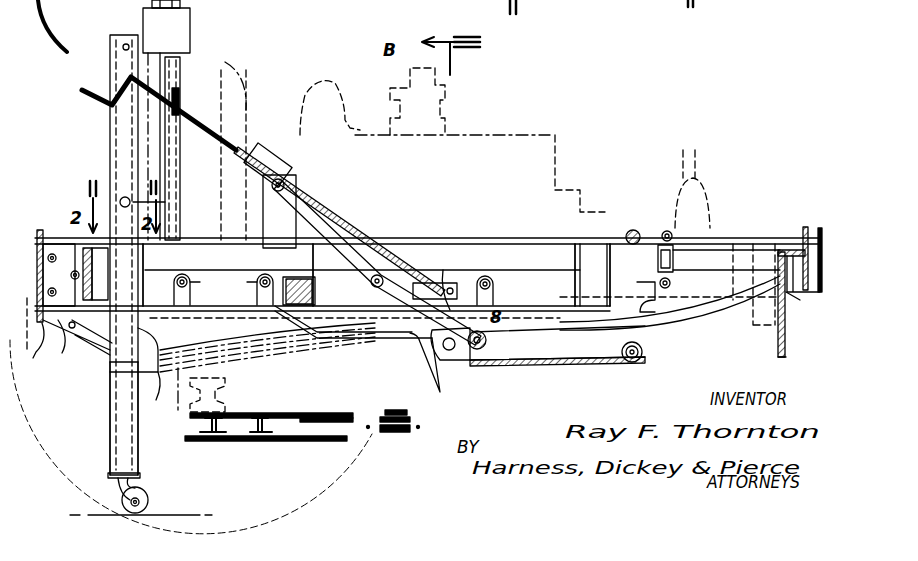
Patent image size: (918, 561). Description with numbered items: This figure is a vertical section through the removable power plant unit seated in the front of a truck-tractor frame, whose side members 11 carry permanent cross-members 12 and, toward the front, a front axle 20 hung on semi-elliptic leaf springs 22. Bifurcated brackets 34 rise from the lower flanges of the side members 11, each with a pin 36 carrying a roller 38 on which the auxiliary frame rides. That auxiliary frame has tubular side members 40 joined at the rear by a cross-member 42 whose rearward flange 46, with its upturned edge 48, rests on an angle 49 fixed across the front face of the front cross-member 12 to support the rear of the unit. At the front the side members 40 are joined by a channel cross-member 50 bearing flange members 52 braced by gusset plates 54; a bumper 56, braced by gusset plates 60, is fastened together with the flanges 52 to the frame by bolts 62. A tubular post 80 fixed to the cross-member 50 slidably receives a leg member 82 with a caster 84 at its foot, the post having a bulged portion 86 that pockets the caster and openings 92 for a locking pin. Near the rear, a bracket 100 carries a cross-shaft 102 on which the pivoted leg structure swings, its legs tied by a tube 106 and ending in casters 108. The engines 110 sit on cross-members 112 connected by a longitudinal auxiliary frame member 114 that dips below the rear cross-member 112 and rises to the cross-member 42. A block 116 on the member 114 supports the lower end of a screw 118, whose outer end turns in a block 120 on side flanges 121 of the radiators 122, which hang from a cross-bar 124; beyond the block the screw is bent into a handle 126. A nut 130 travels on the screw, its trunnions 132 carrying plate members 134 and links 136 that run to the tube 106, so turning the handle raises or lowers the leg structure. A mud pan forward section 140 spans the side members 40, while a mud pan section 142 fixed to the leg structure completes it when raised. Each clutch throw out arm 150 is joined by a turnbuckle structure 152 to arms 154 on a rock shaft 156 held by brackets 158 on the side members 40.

The frame side members 11 is at (737, 227).
The cross-members 12 is at (793, 227).
The front axle 20 is at (225, 394).
The semi-elliptic leaf springs 22 is at (284, 425).
The bifurcated brackets 34 is at (180, 297).
The pin 36 is at (268, 300).
The roller 38 is at (498, 265).
The side members 40 is at (497, 246).
The cross-member 42 is at (785, 332).
The rearwardly directed flange 46 is at (790, 230).
The upwardly curved edge 48 is at (799, 226).
The angle 49 is at (790, 294).
The channel sectioned cross-member 50 is at (120, 355).
The flange member 52 is at (42, 232).
The gusset plates 54 is at (52, 248).
The bumper 56 is at (50, 340).
The gusset plates 60 is at (57, 0).
The bolts 62 is at (103, 5).
The tubular post 80 is at (110, 127).
The leg member 82 is at (112, 419).
The caster 84 is at (148, 497).
The bulged out portion 86 is at (149, 389).
The openings 92 is at (122, 49).
The bracket 100 is at (653, 350).
The cross-shaft 102 is at (643, 366).
The tube 106 is at (488, 340).
The casters 108 is at (423, 368).
The engines 110 is at (505, 130).
The cross-members 112 is at (292, 255).
The auxiliary frame member 114 is at (296, 339).
The block 116 is at (443, 270).
The screw 118 is at (345, 242).
The block 120 is at (180, 84).
The side flanges 121 is at (170, 160).
The radiators 122 is at (190, 25).
The cross-bar 124 is at (157, 247).
The handle 126 is at (80, 96).
The nut 130 is at (284, 166).
The trunnion 132 is at (300, 186).
The plate member 134 is at (280, 211).
The link 136 is at (370, 242).
The mud pan forward section 140 is at (241, 390).
The mud pan section 142 is at (533, 360).
The clutch throw out arm 150 is at (670, 303).
The turnbuckle structure 152 is at (675, 255).
The arms 154 is at (659, 228).
The rock shaft 156 is at (633, 228).
The brackets 158 is at (612, 232).